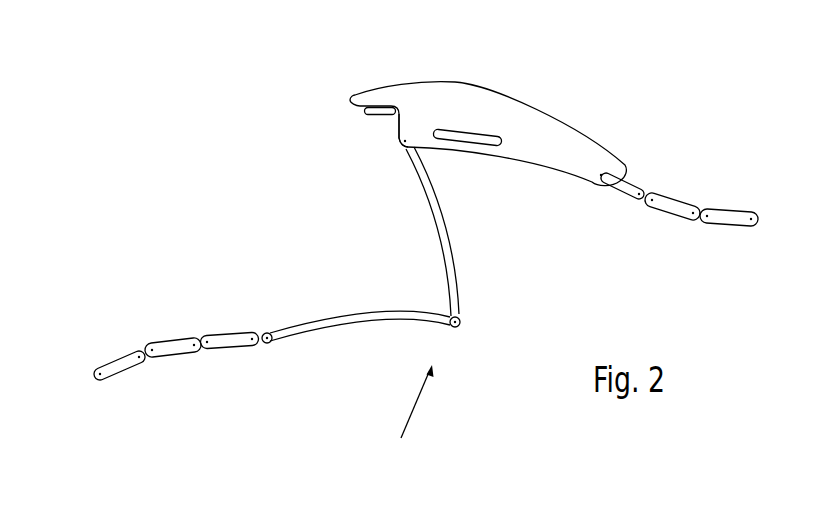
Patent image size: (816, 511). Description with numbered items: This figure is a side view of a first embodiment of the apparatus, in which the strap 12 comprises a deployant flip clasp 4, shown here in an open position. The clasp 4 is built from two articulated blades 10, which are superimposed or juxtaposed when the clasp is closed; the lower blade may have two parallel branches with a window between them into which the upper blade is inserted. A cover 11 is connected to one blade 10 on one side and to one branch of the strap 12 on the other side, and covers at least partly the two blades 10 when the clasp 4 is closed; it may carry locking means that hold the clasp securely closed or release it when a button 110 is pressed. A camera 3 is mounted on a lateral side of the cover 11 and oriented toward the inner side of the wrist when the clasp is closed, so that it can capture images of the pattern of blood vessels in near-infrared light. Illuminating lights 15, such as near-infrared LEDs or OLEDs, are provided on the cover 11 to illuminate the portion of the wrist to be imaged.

The cover 11 is at (553, 138).
The button 110 is at (475, 138).
The illuminating lights 15 is at (368, 113).
The camera 3 is at (380, 113).
The blades 10 is at (327, 320).
The strap 12 is at (168, 348).
The deployant flip clasp 4 is at (413, 412).